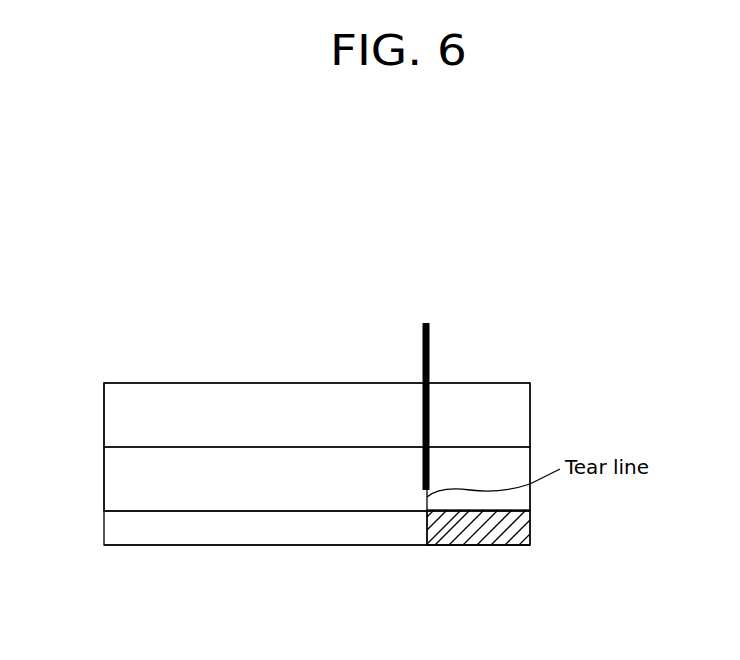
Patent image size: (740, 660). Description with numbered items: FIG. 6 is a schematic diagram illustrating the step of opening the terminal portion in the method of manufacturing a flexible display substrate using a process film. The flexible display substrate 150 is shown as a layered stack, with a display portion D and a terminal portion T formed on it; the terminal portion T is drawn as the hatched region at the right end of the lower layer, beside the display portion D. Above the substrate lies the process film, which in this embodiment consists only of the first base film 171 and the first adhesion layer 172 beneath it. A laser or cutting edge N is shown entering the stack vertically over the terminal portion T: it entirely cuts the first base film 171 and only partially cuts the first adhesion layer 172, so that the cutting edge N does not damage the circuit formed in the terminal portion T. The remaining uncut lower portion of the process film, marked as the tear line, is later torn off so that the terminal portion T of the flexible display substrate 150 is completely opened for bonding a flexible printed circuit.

The flexible display substrate 150 is at (543, 531).
The first base film 171 is at (135, 423).
The first adhesion layer 172 is at (135, 480).
The cutting edge N is at (430, 334).
The display portion D is at (270, 533).
The terminal portion T is at (468, 545).